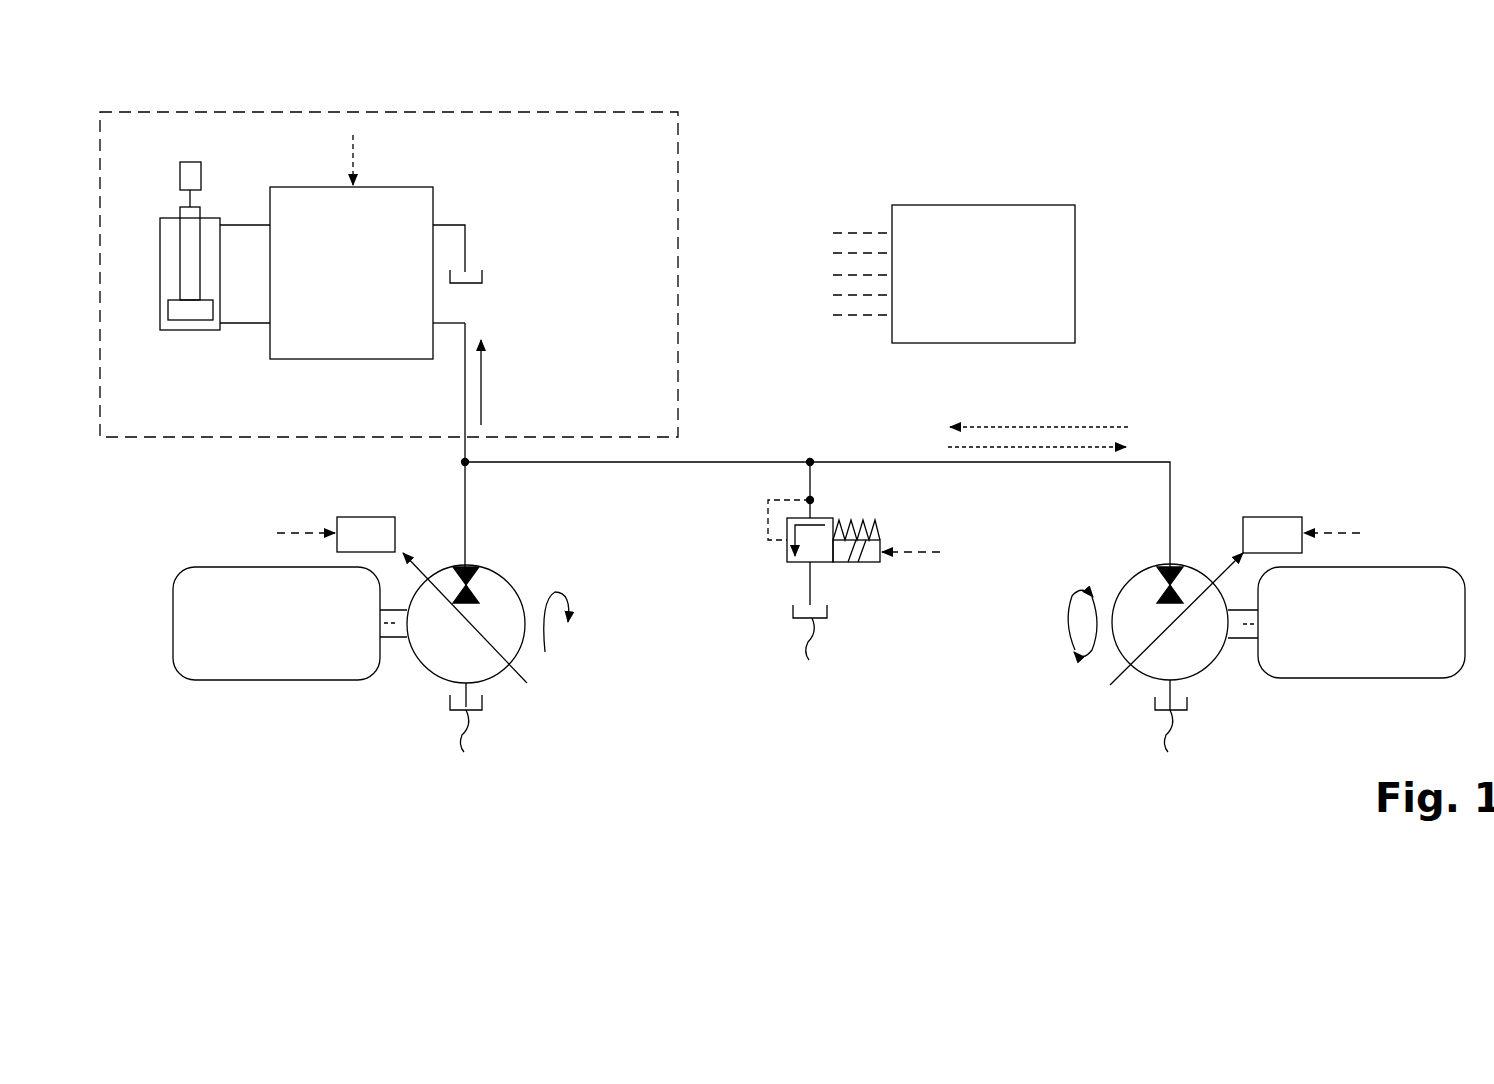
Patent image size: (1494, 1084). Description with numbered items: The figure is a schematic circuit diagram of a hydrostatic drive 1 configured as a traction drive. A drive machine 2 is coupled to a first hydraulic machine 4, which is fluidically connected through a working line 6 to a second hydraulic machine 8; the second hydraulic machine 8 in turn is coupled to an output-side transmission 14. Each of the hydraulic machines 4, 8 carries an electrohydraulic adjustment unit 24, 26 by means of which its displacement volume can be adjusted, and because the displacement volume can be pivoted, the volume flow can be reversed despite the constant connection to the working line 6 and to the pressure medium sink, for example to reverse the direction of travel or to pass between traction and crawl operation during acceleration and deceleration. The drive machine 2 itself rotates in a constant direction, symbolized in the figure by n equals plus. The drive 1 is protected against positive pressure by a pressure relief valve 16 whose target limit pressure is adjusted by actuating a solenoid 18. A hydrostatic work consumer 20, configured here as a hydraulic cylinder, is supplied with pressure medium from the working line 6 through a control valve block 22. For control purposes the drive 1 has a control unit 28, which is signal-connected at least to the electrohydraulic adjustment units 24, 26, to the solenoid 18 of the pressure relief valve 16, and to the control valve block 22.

The hydrostatic drive 1 is at (1220, 125).
The drive machine 2 is at (284, 642).
The first hydraulic machine 4 is at (508, 572).
The working line 6 is at (728, 460).
The second hydraulic machine 8 is at (1128, 578).
The output-side transmission 14 is at (1377, 642).
The pressure relief valve 16 is at (786, 551).
The solenoid 18 is at (870, 565).
The hydrostatic work consumer 20 is at (236, 156).
The control valve block 22 is at (370, 293).
The electrohydraulic adjustment unit 24 is at (366, 516).
The electrohydraulic adjustment unit 26 is at (1275, 516).
The control unit 28 is at (1000, 294).